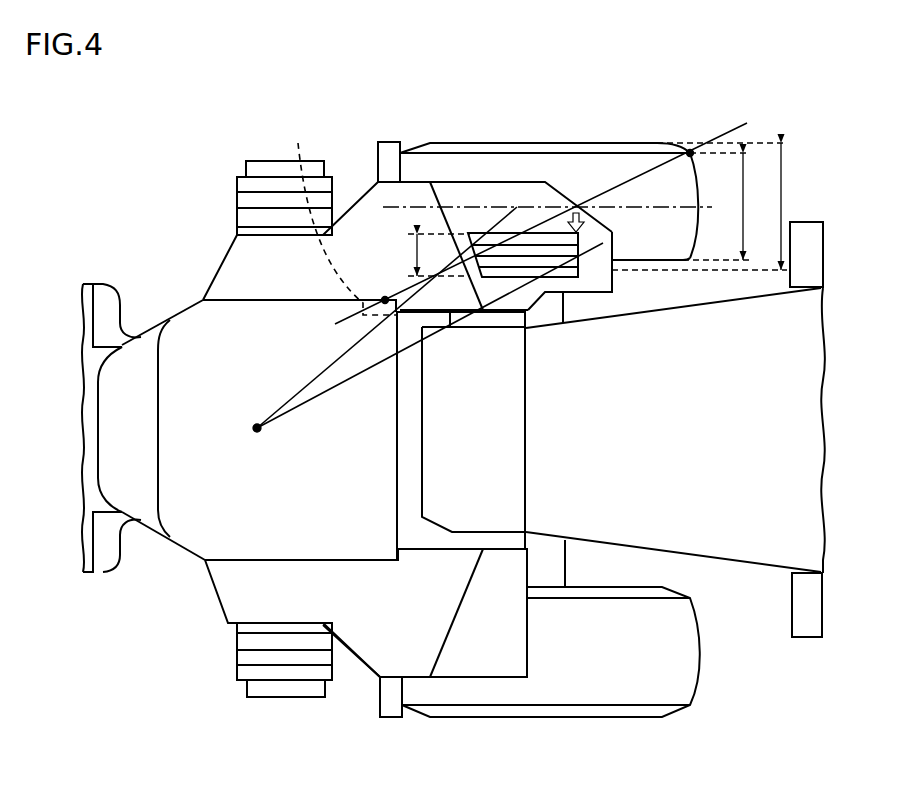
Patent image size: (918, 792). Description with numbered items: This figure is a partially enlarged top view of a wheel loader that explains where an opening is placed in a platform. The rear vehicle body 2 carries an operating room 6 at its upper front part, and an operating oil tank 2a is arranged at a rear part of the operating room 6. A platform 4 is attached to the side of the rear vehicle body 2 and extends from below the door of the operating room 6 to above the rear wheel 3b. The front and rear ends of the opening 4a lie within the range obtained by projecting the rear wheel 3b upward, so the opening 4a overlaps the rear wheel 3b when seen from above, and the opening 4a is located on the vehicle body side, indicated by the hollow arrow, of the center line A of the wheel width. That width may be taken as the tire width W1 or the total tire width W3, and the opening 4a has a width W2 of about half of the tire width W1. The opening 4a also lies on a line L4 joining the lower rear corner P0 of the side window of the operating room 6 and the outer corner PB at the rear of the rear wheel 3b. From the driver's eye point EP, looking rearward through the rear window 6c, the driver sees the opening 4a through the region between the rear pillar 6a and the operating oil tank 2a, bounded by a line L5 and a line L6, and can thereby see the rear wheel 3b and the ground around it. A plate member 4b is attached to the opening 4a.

The rear vehicle body 2 is at (353, 158).
The operating oil tank 2a is at (483, 493).
The rear wheel 3b is at (566, 170).
The platform 4 is at (448, 195).
The opening 4a is at (479, 233).
The plate member 4b is at (578, 274).
The operating room 6 is at (211, 328).
The rear pillar 6a is at (342, 218).
The rear window 6c is at (398, 453).
The center line A is at (547, 208).
The line L4 is at (637, 180).
The line L5 is at (516, 208).
The line L6 is at (593, 242).
The eye point EP is at (256, 444).
The lower rear corner P0 is at (385, 297).
The outer corner PB is at (691, 151).
The tire width W1 is at (732, 206).
The width W2 is at (415, 240).
The total tire width W3 is at (717, 206).